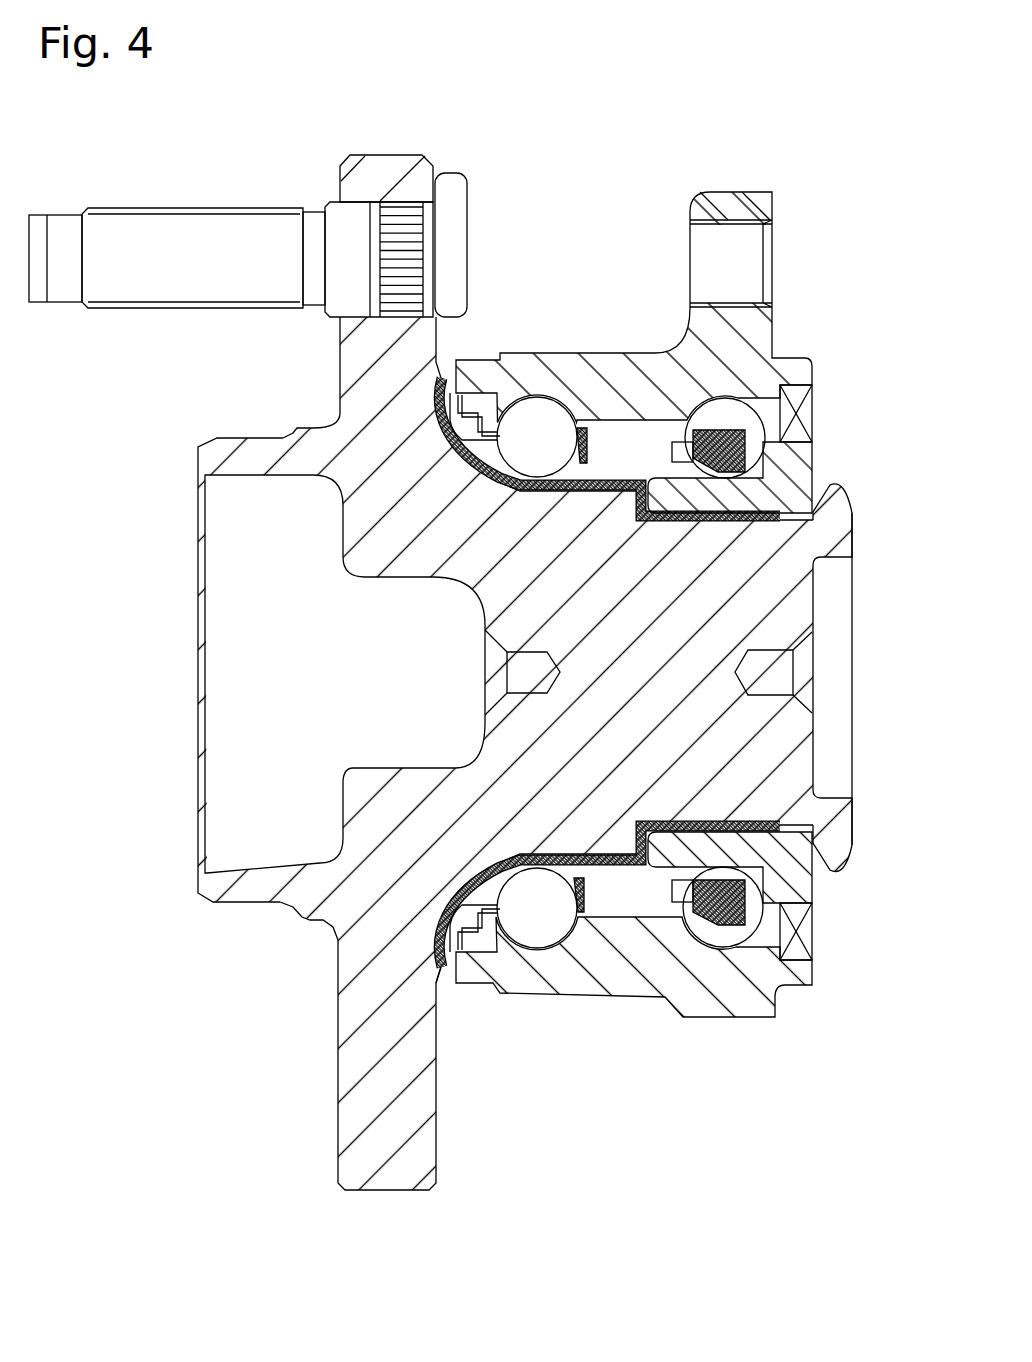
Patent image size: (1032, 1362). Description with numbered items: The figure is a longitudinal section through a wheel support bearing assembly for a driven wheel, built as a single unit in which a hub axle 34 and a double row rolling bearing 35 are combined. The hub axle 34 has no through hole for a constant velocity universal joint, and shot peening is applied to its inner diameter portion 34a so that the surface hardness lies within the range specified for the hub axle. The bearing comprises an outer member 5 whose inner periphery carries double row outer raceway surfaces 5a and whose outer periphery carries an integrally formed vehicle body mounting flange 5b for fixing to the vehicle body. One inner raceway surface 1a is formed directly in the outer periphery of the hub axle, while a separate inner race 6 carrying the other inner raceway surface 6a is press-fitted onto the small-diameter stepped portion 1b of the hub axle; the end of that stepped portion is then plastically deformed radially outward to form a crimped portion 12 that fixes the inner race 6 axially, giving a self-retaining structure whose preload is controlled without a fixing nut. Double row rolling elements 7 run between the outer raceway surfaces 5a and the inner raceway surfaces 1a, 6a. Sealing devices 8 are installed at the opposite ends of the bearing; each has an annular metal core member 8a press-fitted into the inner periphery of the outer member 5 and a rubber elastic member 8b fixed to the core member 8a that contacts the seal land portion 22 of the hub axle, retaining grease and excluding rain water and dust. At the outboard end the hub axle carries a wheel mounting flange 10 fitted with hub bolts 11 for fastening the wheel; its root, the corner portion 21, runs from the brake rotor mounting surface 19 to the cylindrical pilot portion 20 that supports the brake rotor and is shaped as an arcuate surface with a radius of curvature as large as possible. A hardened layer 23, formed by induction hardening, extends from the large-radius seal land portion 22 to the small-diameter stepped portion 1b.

The inner raceway surface 1a is at (527, 462).
The small-diameter stepped portion 1b is at (743, 497).
The outer member 5 is at (630, 318).
The outer raceway surface 5a is at (538, 410).
The vehicle body mounting flange 5b is at (728, 198).
The inner race 6 is at (792, 873).
The inner raceway surface 6a is at (795, 897).
The rolling element 7 is at (538, 935).
The sealing device 8 is at (652, 757).
The core member 8a is at (478, 957).
The elastic member 8b is at (478, 952).
The wheel mounting flange 10 is at (386, 165).
The hub bolt 11 is at (178, 224).
The crimped portion 12 is at (838, 532).
The brake rotor mounting surface 19 is at (337, 1067).
The cylindrical pilot portion 20 is at (308, 923).
The corner portion 21 is at (336, 413).
The seal land portion 22 is at (440, 963).
The hardened layer 23 is at (728, 820).
The hub axle 34 is at (293, 455).
The inner diameter portion 34a is at (393, 577).
The double row rolling bearing 35 is at (656, 320).